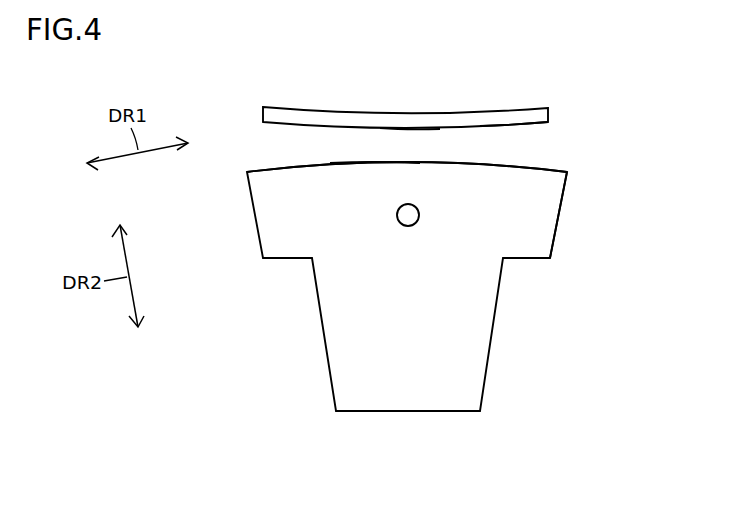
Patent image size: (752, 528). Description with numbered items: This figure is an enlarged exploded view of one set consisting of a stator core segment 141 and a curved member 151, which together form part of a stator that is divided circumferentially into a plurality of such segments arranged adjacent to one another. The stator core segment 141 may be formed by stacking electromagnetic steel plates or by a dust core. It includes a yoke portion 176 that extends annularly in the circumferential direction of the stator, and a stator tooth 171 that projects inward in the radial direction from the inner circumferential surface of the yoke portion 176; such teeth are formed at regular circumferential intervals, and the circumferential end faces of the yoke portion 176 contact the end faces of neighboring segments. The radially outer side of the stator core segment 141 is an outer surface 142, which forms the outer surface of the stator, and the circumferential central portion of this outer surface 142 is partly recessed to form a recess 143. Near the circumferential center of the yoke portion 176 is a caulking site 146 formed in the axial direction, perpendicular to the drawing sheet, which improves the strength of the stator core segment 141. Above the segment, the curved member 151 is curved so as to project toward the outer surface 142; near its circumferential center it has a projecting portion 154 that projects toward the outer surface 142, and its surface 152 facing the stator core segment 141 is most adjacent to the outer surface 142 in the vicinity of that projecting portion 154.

The stator core segment 141 is at (482, 333).
The outer surface 142 is at (533, 165).
The recess 143 is at (373, 163).
The caulking site 146 is at (397, 216).
The curved member 151 is at (457, 120).
The surface 152 is at (520, 124).
The projecting portion 154 is at (415, 118).
The stator tooth 171 is at (408, 405).
The yoke portion 176 is at (547, 218).